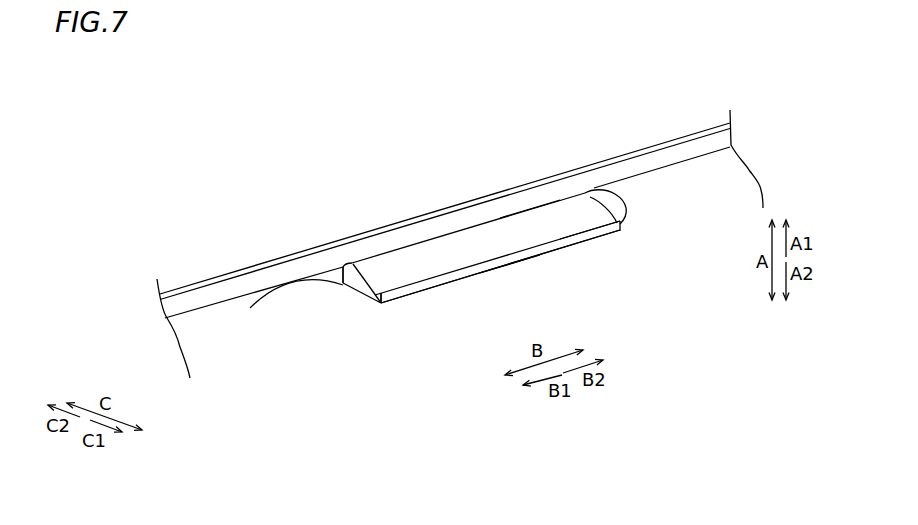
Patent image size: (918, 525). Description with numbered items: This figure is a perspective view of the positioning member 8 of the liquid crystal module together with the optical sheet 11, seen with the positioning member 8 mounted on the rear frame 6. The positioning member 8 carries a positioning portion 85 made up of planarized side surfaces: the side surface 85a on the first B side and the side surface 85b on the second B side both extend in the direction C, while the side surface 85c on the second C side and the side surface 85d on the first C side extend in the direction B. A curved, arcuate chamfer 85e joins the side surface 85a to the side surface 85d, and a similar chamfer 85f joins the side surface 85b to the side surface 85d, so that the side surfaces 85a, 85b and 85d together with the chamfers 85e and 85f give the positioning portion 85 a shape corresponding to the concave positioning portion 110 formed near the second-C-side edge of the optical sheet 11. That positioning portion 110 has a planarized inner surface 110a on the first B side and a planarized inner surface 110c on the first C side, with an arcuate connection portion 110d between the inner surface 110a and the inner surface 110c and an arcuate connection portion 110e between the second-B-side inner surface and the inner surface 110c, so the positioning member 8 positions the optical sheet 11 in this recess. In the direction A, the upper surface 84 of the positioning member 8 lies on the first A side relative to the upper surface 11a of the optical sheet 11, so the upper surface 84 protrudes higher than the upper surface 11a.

The rear frame 6 is at (428, 244).
The optical sheet 11 is at (440, 244).
The upper surface 11a is at (250, 310).
The positioning member 8 is at (536, 222).
The upper surface 84 is at (530, 181).
The positioning portion 85 is at (484, 252).
The side surface 85a is at (356, 283).
The side surface 85b is at (637, 248).
The side surface 85c is at (442, 240).
The side surface 85d is at (478, 271).
The chamfer 85e is at (384, 305).
The chamfer 85f is at (620, 232).
The positioning portion 110 is at (472, 203).
The inner surface 110a is at (344, 267).
The inner surface 110c is at (512, 263).
The connection portion 110d is at (383, 296).
The connection portion 110e is at (578, 218).